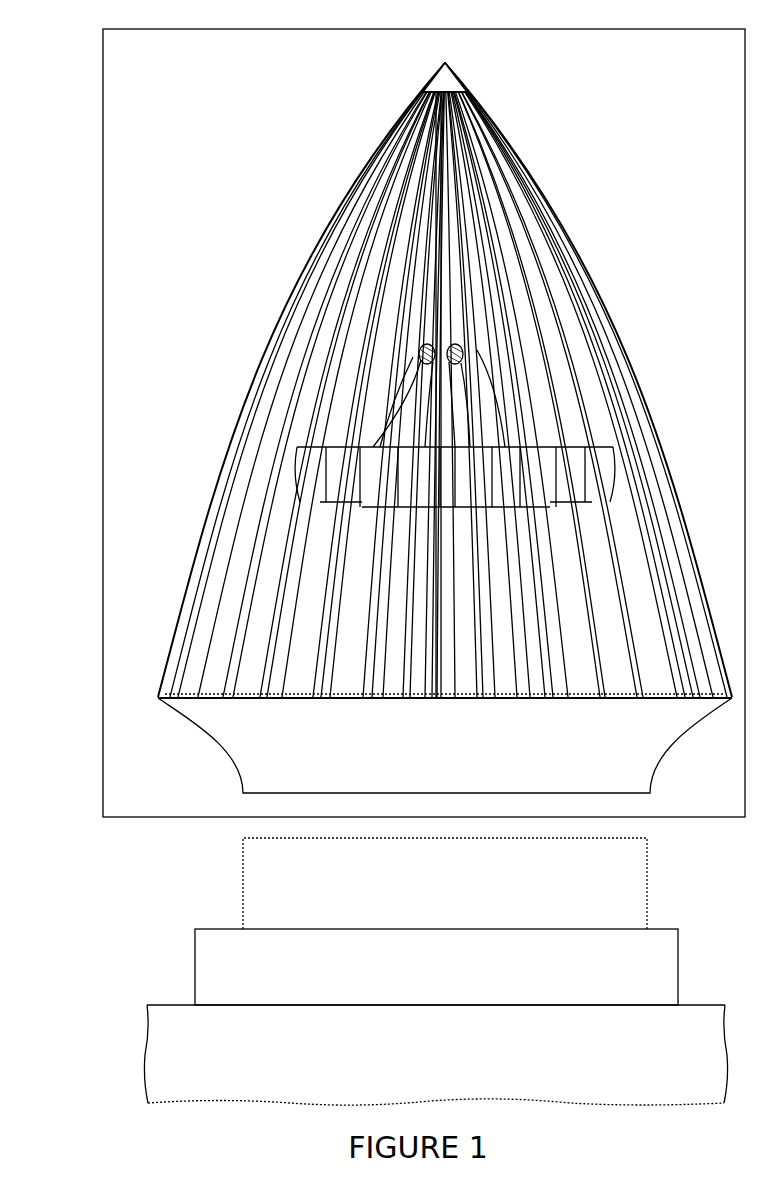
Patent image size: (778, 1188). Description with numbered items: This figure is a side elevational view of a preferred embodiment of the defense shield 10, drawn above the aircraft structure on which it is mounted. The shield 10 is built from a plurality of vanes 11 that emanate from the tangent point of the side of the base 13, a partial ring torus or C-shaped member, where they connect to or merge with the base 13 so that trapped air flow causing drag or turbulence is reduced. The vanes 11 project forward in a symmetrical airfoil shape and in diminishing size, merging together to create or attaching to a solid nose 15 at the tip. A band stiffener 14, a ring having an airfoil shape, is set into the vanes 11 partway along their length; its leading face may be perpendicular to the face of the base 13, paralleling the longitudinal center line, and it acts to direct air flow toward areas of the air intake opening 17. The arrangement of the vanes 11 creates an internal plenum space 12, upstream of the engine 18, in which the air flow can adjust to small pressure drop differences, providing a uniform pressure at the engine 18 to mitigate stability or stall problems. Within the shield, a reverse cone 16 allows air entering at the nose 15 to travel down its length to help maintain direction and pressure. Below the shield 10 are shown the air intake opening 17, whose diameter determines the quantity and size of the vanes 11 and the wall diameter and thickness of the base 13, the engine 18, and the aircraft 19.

The defense shield 10 is at (92, 144).
The vanes 11 is at (221, 422).
The plenum space 12 is at (502, 425).
The base 13 is at (206, 756).
The band stiffener 14 is at (287, 471).
The nose 15 is at (412, 82).
The reverse cone 16 is at (437, 384).
The air intake opening 17 is at (218, 876).
The engine 18 is at (179, 967).
The aircraft 19 is at (112, 1058).